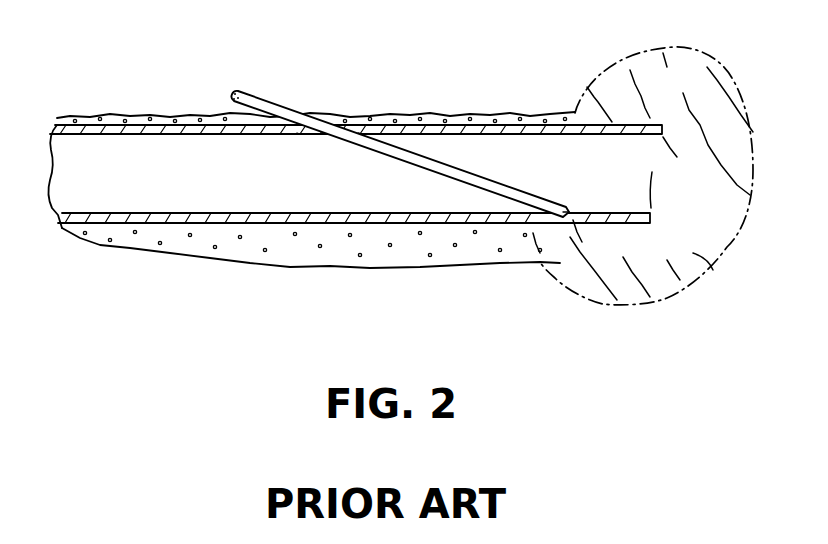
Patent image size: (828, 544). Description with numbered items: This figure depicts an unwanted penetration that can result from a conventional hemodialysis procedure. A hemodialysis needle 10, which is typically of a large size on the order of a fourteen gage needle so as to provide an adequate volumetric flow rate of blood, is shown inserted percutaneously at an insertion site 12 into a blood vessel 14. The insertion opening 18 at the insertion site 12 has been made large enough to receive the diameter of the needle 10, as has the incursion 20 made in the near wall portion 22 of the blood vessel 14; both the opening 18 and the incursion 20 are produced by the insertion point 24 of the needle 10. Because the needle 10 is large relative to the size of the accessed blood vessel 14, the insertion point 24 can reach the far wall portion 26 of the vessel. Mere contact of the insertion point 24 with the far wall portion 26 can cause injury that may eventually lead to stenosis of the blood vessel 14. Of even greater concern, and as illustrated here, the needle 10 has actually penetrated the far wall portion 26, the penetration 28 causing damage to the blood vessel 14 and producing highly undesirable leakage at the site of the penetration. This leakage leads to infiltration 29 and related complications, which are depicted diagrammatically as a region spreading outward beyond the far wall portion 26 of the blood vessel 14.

The hemodialysis needle 10 is at (268, 92).
The insertion site 12 is at (310, 107).
The blood vessel 14 is at (495, 120).
The insertion opening 18 is at (297, 133).
The incursion 20 is at (360, 132).
The near wall portion 22 is at (368, 127).
The insertion point 24 is at (565, 214).
The far wall portion 26 is at (620, 208).
The penetration 28 is at (566, 208).
The infiltration 29 is at (575, 273).